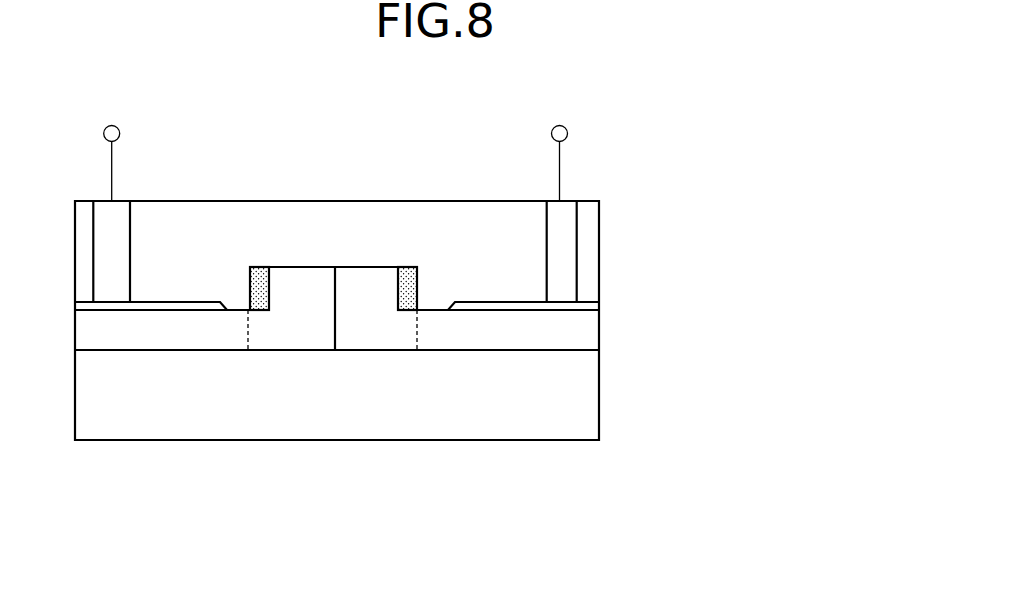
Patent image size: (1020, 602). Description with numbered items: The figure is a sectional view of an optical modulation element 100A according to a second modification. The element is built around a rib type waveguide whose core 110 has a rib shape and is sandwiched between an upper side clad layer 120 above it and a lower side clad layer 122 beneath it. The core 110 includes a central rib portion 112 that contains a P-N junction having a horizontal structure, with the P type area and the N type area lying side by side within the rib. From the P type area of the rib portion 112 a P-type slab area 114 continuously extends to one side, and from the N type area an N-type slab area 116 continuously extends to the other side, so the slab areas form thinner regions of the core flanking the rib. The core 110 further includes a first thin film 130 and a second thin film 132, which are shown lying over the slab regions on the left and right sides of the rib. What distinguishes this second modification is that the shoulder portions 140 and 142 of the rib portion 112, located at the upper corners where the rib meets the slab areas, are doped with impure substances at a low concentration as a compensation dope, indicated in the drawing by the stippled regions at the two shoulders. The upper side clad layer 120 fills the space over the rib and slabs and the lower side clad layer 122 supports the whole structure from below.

The optical modulation element 100A is at (795, 88).
The core 110 is at (533, 528).
The rib portion 112 is at (357, 337).
The P-type slab area 114 is at (203, 333).
The N-type slab area 116 is at (480, 330).
The upper side clad layer 120 is at (285, 237).
The lower side clad layer 122 is at (568, 398).
The first thin film 130 is at (152, 307).
The second thin film 132 is at (512, 308).
The shoulder portion 140 is at (262, 275).
The shoulder portion 142 is at (407, 273).